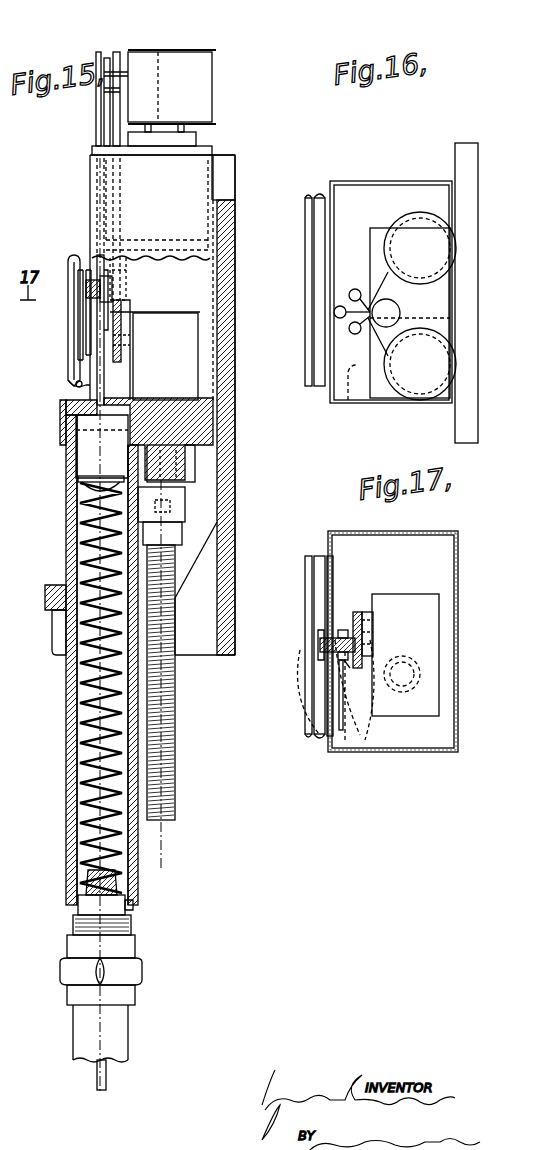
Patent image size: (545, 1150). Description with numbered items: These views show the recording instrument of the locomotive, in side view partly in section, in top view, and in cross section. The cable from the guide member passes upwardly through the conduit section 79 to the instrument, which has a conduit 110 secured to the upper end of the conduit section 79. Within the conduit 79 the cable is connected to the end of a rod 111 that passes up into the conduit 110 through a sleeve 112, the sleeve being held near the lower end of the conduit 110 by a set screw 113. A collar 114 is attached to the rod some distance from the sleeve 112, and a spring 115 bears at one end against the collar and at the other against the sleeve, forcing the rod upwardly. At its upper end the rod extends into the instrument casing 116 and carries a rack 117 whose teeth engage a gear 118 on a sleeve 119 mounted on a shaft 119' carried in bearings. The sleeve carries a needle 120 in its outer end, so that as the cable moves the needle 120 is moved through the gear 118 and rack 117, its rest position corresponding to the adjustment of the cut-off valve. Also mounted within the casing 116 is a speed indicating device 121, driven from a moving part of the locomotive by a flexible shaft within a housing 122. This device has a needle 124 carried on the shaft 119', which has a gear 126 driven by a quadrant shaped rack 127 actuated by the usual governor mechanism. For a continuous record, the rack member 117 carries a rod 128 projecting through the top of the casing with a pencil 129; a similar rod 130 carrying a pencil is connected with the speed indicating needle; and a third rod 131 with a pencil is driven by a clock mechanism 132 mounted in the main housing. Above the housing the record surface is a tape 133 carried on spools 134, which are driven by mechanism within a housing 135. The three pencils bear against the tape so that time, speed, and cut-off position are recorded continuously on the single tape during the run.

In FIG. 15, the conduit section 79 is at (120, 1030).
In FIG. 15, the conduit 110 is at (140, 875).
In FIG. 17, the conduit 110 is at (326, 690).
In FIG. 15, the rod 111 is at (104, 1082).
In FIG. 15, the sleeve 112 is at (132, 918).
In FIG. 15, the set screw 113 is at (134, 905).
In FIG. 15, the collar 114 is at (70, 488).
In FIG. 15, the spring 115 is at (82, 545).
In FIG. 15, the instrument casing 116 is at (218, 360).
In FIG. 16, the instrument casing 116 is at (356, 183).
In FIG. 17, the instrument casing 116 is at (376, 752).
In FIG. 15, the rack 117 is at (100, 235).
In FIG. 17, the rack 117 is at (340, 736).
In FIG. 15, the gear 118 is at (99, 282).
In FIG. 17, the gear 118 is at (343, 638).
In FIG. 17, the sleeve 119 is at (304, 690).
In FIG. 17, the shaft 119' is at (367, 697).
In FIG. 15, the needle 120 is at (84, 306).
In FIG. 17, the needle 120 is at (322, 632).
In FIG. 15, the speed indicating device 121 is at (185, 345).
In FIG. 17, the speed indicating device 121 is at (413, 716).
In FIG. 15, the housing 122 is at (177, 775).
In FIG. 17, the housing 122 is at (414, 668).
In FIG. 15, the needle 124 is at (70, 372).
In FIG. 17, the needle 124 is at (318, 640).
In FIG. 15, the gear 126 is at (116, 276).
In FIG. 17, the gear 126 is at (362, 636).
In FIG. 15, the quadrant shaped rack 127 is at (125, 356).
In FIG. 17, the quadrant shaped rack 127 is at (360, 622).
In FIG. 15, the rod 128 is at (97, 125).
In FIG. 16, the rod 128 is at (340, 306).
In FIG. 15, the pencil 129 is at (107, 56).
In FIG. 16, the pencil 129 is at (352, 320).
In FIG. 16, the rod 130 is at (359, 290).
In FIG. 15, the third rod 131 is at (118, 102).
In FIG. 16, the third rod 131 is at (358, 330).
In FIG. 15, the clock mechanism 132 is at (198, 270).
In FIG. 16, the clock mechanism 132 is at (350, 385).
In FIG. 15, the tape 133 is at (145, 62).
In FIG. 16, the tape 133 is at (376, 254).
In FIG. 15, the spools 134 is at (210, 48).
In FIG. 16, the spools 134 is at (415, 222).
In FIG. 15, the housing 135 is at (200, 136).
In FIG. 16, the housing 135 is at (380, 386).